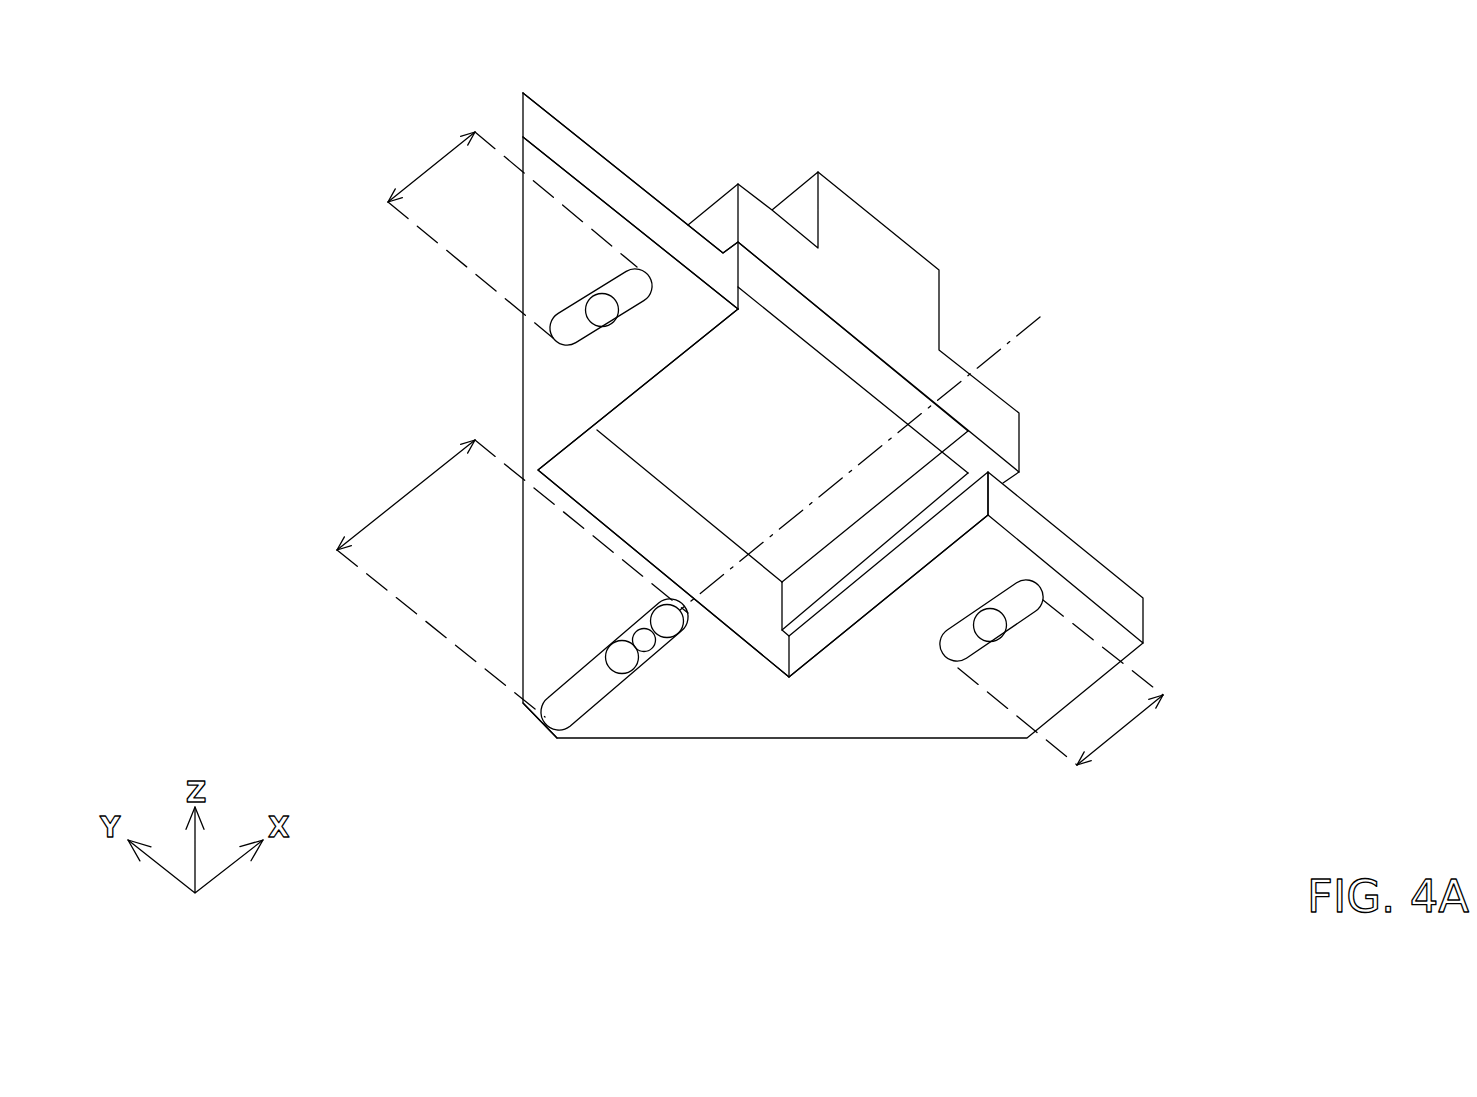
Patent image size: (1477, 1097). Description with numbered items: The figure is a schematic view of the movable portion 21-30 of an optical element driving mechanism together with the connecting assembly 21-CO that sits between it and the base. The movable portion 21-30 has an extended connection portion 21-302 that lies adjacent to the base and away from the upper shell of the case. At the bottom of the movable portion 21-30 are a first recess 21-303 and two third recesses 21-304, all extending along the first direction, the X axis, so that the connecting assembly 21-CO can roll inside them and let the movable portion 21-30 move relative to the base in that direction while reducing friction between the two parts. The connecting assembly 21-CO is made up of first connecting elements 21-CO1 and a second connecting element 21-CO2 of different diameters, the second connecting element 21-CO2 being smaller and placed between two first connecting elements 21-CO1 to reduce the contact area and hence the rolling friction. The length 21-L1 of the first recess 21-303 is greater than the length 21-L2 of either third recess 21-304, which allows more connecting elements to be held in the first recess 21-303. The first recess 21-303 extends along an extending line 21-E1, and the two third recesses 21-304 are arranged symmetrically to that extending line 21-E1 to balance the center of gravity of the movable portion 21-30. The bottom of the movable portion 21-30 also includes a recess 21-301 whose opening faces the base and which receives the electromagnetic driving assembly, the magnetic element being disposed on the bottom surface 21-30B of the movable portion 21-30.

The movable portion 21-30 is at (838, 253).
The recess 21-301 is at (813, 417).
The bottom surface 21-30B is at (733, 397).
The extended connection portion 21-302 is at (592, 167).
The first recess 21-303 is at (570, 715).
The third recesses 21-304 is at (560, 338).
The connecting assembly 21-CO is at (201, 202).
The first connecting element 21-CO1 is at (600, 310).
The second connecting element 21-CO2 is at (643, 640).
The extending line 21-E1 is at (547, 719).
The length of the first recess 21-L1 is at (507, 578).
The length of the third recess 21-L2 is at (775, 448).